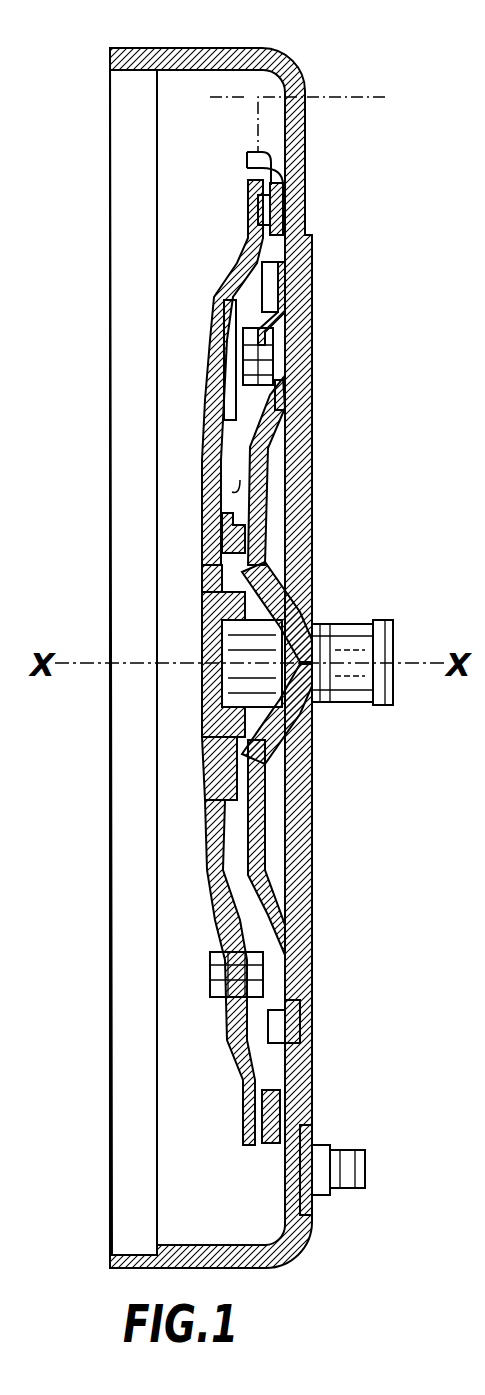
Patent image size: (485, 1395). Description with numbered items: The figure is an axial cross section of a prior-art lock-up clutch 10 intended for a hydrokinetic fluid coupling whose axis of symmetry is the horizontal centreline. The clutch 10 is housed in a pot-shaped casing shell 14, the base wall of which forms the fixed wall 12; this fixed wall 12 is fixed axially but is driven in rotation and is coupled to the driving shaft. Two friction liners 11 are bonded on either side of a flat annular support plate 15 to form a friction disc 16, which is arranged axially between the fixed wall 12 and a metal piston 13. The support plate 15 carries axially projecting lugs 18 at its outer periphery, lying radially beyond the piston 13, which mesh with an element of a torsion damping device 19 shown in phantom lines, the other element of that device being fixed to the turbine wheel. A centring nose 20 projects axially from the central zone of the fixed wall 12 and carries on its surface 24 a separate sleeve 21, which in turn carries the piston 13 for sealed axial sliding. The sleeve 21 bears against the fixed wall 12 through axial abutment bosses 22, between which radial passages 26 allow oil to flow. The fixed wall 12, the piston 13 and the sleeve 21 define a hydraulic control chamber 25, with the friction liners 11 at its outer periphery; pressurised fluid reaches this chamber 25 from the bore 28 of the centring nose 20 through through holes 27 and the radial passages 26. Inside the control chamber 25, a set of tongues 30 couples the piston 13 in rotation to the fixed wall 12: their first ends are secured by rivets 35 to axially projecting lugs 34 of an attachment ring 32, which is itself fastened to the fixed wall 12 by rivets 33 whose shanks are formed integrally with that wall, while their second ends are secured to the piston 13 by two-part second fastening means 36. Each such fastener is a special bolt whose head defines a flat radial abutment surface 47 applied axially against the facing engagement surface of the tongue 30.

The lock-up clutch 10 is at (243, 232).
The friction liner 11 is at (283, 208).
The fixed wall 12 is at (312, 283).
The piston 13 is at (205, 365).
The casing shell 14 is at (307, 68).
The support plate 15 is at (310, 1088).
The friction disc 16 is at (263, 1155).
The lug 18 is at (247, 158).
The torsion damping device 19 is at (262, 97).
The centring nose 20 is at (200, 733).
The sleeve 21 is at (200, 540).
The abutment boss 22 is at (245, 552).
The surface 24 is at (207, 578).
The hydraulic control chamber 25 is at (240, 480).
The radial passage 26 is at (240, 807).
The through hole 27 is at (287, 625).
The bore 28 is at (248, 625).
The tongue 30 is at (243, 395).
The attachment ring 32 is at (275, 275).
The rivet 33 is at (268, 1033).
The lug 34 is at (282, 392).
The rivet 35 is at (273, 352).
The second fastening means 36 is at (208, 978).
The abutment surface 47 is at (270, 304).